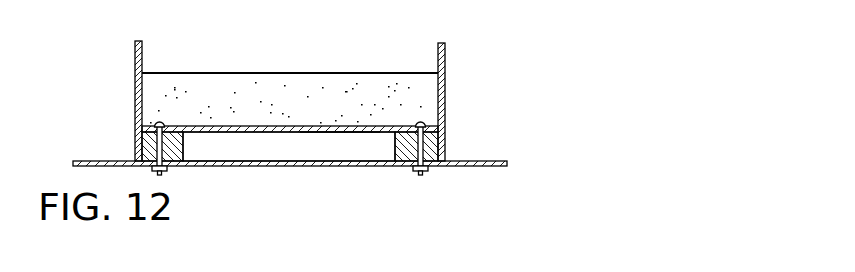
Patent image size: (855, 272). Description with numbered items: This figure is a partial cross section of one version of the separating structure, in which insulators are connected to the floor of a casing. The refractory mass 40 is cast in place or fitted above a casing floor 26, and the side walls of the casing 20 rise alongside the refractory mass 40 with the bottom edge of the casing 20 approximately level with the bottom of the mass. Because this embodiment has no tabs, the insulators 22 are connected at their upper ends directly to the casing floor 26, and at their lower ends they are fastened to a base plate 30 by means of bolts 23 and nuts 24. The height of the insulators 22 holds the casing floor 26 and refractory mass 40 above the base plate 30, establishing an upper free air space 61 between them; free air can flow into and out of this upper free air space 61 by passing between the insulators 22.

The casing 20 is at (445, 65).
The insulators 22 is at (447, 147).
The bolts 23 is at (423, 123).
The nuts 24 is at (427, 177).
The casing floor 26 is at (328, 137).
The base plate 30 is at (290, 162).
The refractory mass 40 is at (277, 105).
The upper free air space 61 is at (272, 143).